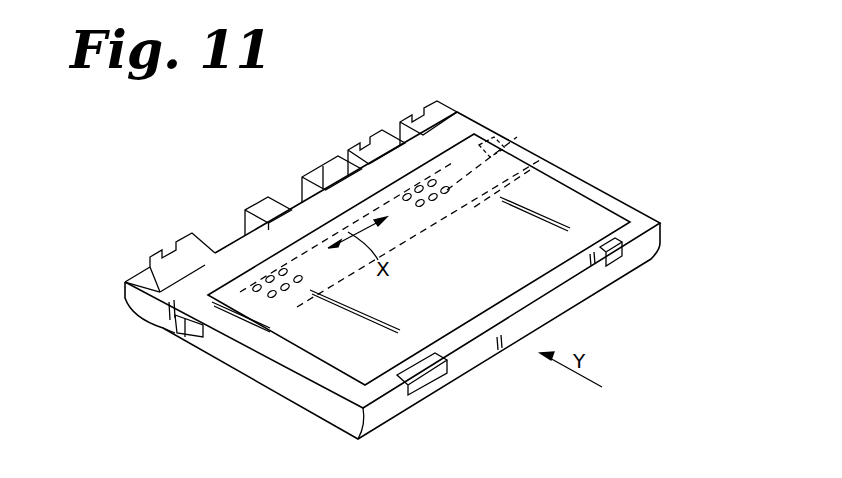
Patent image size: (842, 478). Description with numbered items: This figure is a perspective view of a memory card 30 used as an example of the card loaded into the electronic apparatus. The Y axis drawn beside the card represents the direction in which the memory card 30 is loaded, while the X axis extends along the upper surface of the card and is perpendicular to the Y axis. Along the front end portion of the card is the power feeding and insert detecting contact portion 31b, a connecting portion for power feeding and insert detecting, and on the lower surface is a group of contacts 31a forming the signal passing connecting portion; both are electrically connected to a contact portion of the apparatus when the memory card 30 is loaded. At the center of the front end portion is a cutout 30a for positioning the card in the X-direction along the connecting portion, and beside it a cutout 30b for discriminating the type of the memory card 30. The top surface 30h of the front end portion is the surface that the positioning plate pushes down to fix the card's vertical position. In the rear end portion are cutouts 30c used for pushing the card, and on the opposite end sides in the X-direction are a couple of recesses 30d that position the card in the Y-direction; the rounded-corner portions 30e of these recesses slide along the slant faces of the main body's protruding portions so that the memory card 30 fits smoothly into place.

The memory card 30 is at (587, 182).
The cutout 30a is at (300, 205).
The cutout 30b is at (244, 222).
The cutouts 30c is at (437, 373).
The recesses 30d is at (520, 140).
The rounded-corner portions 30e is at (177, 333).
The top surface 30h is at (321, 174).
The group of contacts 31a is at (428, 183).
The power feeding and insert detecting contact portion 31b is at (380, 128).